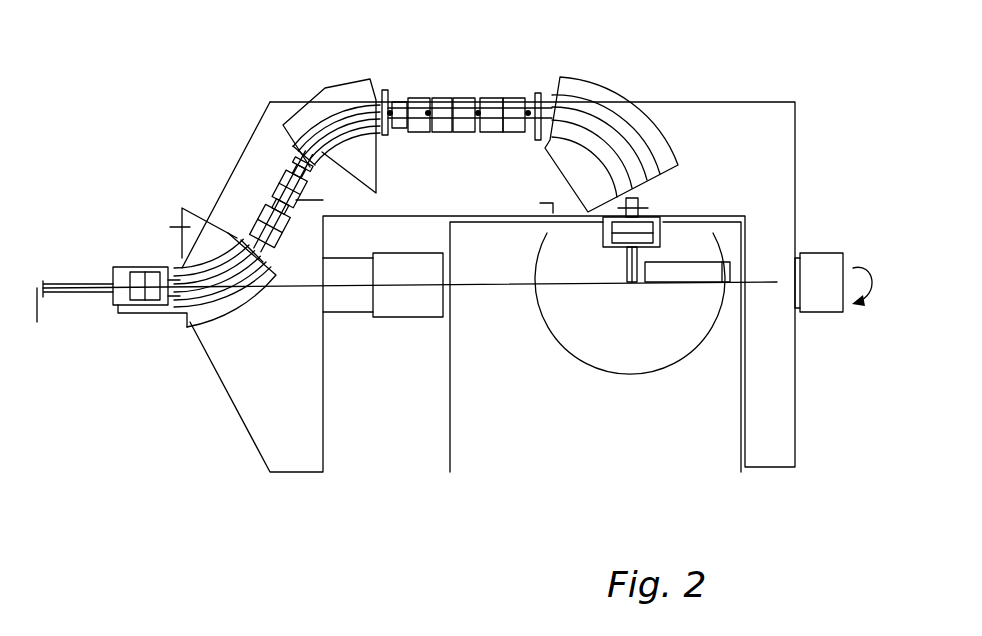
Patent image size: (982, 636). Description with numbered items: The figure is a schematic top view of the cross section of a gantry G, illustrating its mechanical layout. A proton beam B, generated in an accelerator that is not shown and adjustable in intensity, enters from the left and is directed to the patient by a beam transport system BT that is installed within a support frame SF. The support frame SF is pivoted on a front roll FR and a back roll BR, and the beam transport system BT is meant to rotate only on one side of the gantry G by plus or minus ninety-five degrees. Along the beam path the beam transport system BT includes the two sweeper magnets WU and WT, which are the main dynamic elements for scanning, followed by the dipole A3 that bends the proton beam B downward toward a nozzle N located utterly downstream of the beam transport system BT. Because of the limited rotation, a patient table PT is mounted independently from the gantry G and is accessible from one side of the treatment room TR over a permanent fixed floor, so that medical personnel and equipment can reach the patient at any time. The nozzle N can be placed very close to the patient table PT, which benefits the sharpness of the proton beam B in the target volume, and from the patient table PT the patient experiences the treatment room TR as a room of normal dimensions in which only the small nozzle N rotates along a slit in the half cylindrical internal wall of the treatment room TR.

The gantry g is at (203, 137).
The proton beam B is at (79, 297).
The beam transport system BT is at (276, 162).
The sweeper magnet WT is at (491, 95).
The sweeper magnet WU is at (531, 100).
The dipole A3 is at (612, 80).
The support frame SF is at (796, 138).
The back roll BR is at (392, 317).
The treatment room TR is at (615, 319).
The nozzle N is at (620, 257).
The patient table PT is at (652, 273).
The front roll FR is at (817, 313).